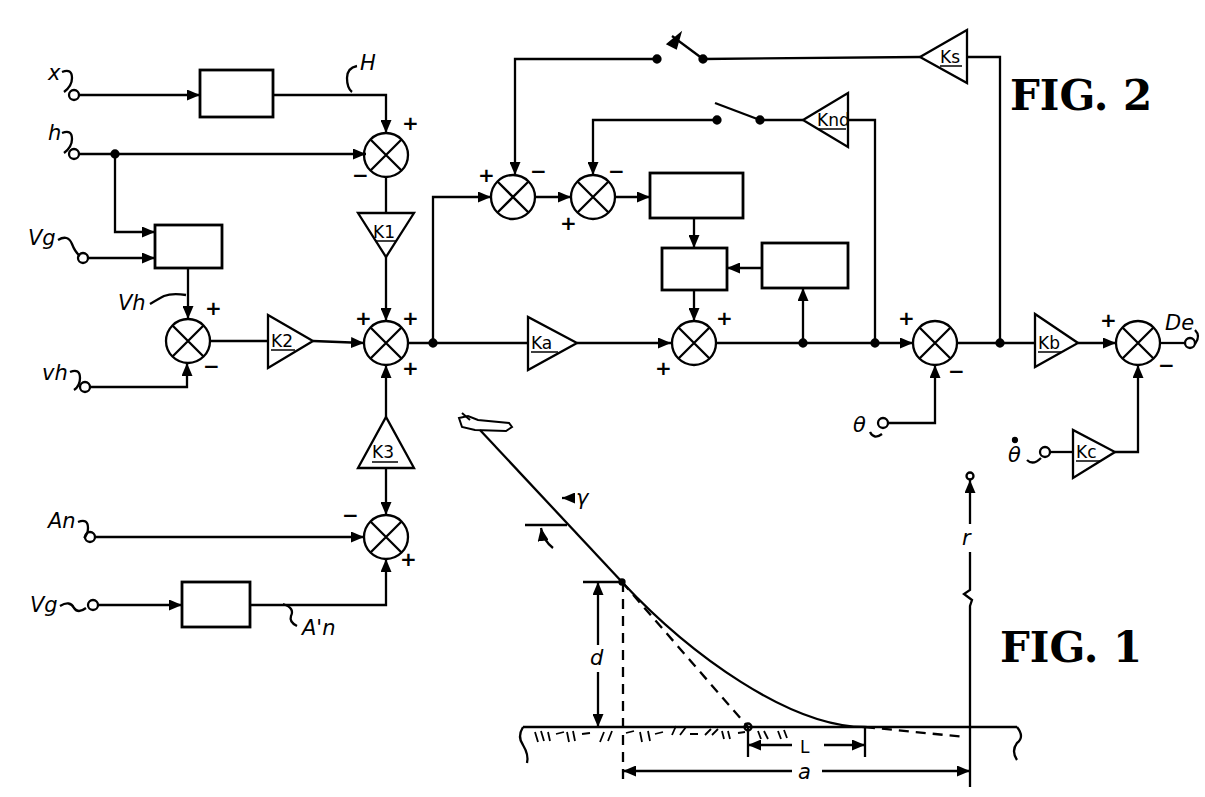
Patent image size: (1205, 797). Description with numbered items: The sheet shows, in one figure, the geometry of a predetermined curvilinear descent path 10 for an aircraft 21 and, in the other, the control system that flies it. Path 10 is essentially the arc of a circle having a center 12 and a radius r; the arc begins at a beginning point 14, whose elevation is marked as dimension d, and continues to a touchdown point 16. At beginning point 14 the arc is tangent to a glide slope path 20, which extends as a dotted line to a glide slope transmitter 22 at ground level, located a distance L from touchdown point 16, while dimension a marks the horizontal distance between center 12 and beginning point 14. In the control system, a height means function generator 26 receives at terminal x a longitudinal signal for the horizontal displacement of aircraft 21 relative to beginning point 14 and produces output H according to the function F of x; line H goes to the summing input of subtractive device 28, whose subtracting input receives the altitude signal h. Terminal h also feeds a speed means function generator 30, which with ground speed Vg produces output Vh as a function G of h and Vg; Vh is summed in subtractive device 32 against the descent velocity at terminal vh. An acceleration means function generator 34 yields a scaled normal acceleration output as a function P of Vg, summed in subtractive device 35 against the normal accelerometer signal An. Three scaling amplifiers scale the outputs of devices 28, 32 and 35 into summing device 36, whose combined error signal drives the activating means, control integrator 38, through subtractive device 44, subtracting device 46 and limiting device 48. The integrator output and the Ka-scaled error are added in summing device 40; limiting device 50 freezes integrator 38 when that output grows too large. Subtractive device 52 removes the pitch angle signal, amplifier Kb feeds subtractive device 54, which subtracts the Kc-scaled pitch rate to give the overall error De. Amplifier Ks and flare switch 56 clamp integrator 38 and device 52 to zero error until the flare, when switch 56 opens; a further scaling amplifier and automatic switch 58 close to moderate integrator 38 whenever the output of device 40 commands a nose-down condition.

In FIG. 1, the curvilinear descent path 10 is at (777, 659).
In FIG. 1, the center 12 is at (966, 477).
In FIG. 1, the beginning point 14 is at (622, 582).
In FIG. 1, the touchdown point 16 is at (865, 725).
In FIG. 1, the glide slope path 20 is at (528, 487).
In FIG. 1, the aircraft 21 is at (503, 420).
In FIG. 1, the glide slope transmitter 22 is at (746, 726).
In FIG. 2, the function generator 26 is at (253, 70).
In FIG. 2, the subtractive device 28 is at (402, 141).
In FIG. 2, the function generator 30 is at (205, 225).
In FIG. 2, the subtractive device 32 is at (170, 355).
In FIG. 2, the function generator 34 is at (216, 582).
In FIG. 2, the subtractive device 35 is at (408, 540).
In FIG. 2, the summing device 36 is at (374, 362).
In FIG. 2, the control integrator 38 is at (662, 272).
In FIG. 2, the summing device 40 is at (700, 365).
In FIG. 2, the subtractive device 44 is at (518, 219).
In FIG. 2, the subtracting device 46 is at (600, 219).
In FIG. 2, the limiting device 48 is at (743, 188).
In FIG. 2, the limiting device 50 is at (800, 243).
In FIG. 2, the subtractive device 52 is at (971, 296).
In FIG. 2, the subtractive device 54 is at (1148, 322).
In FIG. 2, the flare switch 56 is at (668, 37).
In FIG. 2, the automatic switch 58 is at (740, 104).